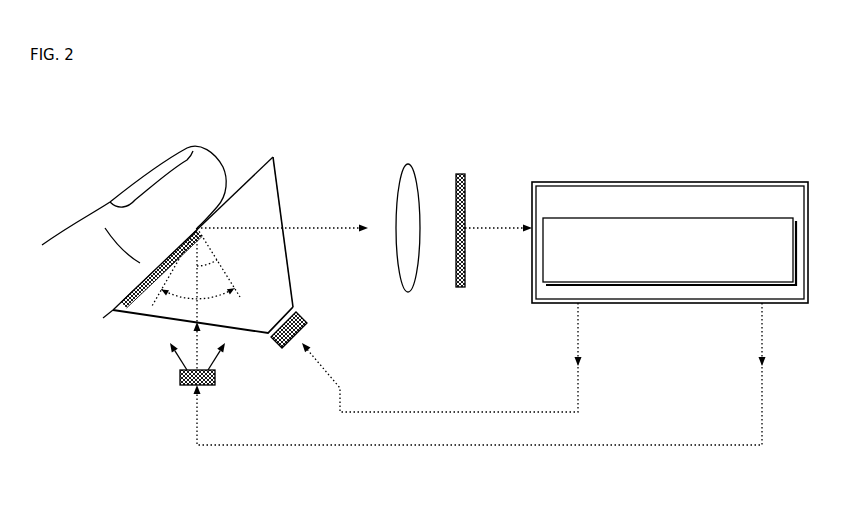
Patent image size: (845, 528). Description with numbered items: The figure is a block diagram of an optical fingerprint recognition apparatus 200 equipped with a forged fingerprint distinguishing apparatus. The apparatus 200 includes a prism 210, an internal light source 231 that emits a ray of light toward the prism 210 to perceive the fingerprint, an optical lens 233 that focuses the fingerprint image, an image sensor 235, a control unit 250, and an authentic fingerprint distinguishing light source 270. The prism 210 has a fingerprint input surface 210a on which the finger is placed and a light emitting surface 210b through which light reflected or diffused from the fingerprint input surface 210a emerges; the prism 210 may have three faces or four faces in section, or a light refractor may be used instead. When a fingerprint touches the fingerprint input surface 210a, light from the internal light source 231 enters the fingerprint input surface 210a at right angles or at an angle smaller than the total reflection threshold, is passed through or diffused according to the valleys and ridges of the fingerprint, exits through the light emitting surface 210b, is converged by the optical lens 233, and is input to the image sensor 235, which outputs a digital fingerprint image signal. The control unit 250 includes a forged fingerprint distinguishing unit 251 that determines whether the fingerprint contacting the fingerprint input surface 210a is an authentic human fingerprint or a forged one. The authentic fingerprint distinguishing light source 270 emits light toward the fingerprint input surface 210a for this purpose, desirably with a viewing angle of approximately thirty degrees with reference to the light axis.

The fingerprint recognition apparatus 200 is at (704, 499).
The prism 210 is at (285, 173).
The fingerprint input surface 210a is at (252, 177).
The light emitting surface 210b is at (290, 277).
The internal light source 231 is at (272, 345).
The optical lens 233 is at (416, 178).
The image sensor 235 is at (465, 178).
The control unit 250 is at (778, 182).
The forged fingerprint distinguishing unit 251 is at (724, 218).
The authentic fingerprint distinguishing light source 270 is at (181, 373).